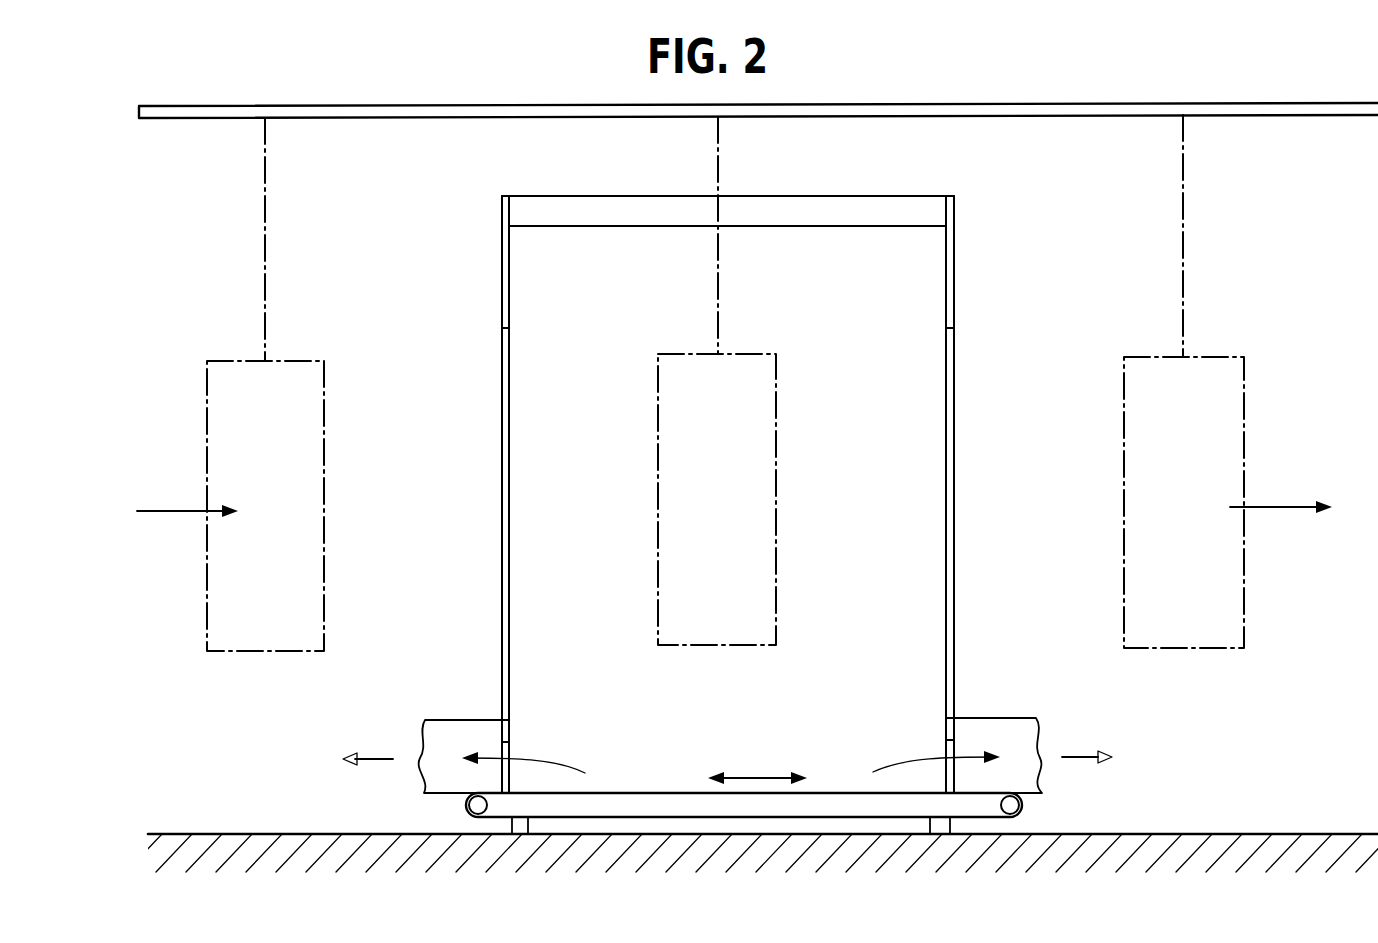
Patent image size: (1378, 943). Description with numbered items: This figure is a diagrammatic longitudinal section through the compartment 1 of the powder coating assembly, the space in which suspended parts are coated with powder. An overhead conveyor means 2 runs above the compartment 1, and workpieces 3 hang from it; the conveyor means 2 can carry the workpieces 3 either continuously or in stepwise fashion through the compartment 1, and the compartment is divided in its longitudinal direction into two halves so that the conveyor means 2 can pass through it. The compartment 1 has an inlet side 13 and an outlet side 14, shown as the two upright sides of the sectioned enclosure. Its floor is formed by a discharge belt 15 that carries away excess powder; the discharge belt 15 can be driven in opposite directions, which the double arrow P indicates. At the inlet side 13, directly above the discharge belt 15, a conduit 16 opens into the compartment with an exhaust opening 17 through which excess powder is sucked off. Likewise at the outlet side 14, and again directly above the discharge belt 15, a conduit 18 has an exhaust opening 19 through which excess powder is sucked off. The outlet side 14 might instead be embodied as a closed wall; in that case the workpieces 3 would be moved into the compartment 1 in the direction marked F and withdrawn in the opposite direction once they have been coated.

The compartment 1 is at (724, 484).
The conveyor means 2 is at (1010, 116).
The workpieces 3 is at (206, 392).
The inlet side 13 is at (502, 355).
The outlet side 14 is at (954, 366).
The discharge belt 15 is at (632, 792).
The conduit 16 is at (444, 734).
The exhaust opening 17 is at (516, 745).
The conduit 18 is at (1014, 728).
The exhaust opening 19 is at (940, 745).
The direction of movement F is at (154, 510).
The double arrow P is at (752, 777).